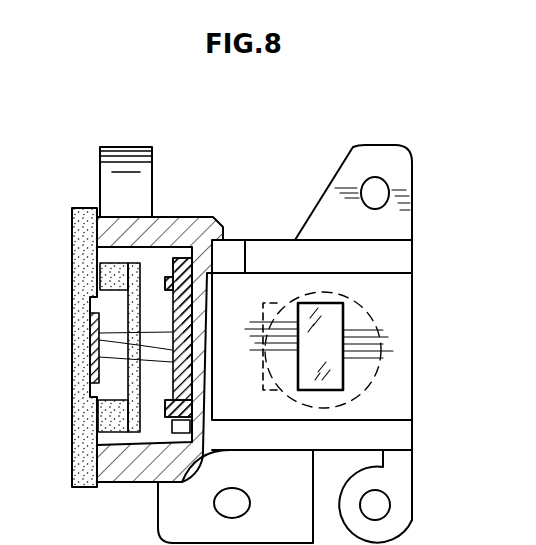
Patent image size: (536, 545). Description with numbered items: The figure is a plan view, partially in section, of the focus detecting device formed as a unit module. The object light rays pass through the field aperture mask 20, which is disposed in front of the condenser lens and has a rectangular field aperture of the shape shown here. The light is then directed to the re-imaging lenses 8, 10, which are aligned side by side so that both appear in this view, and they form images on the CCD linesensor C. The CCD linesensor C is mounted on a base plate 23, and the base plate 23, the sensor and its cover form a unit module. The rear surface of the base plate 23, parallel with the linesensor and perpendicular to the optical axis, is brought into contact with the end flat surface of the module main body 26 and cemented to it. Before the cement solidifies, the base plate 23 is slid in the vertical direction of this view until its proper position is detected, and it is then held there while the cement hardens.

The re-imaging lens 8 is at (172, 373).
The re-imaging lens 10 is at (172, 318).
The field aperture mask 20 is at (343, 358).
The base plate 23 is at (72, 243).
The module main body 26 is at (275, 240).
The CCD linesensor C is at (90, 347).